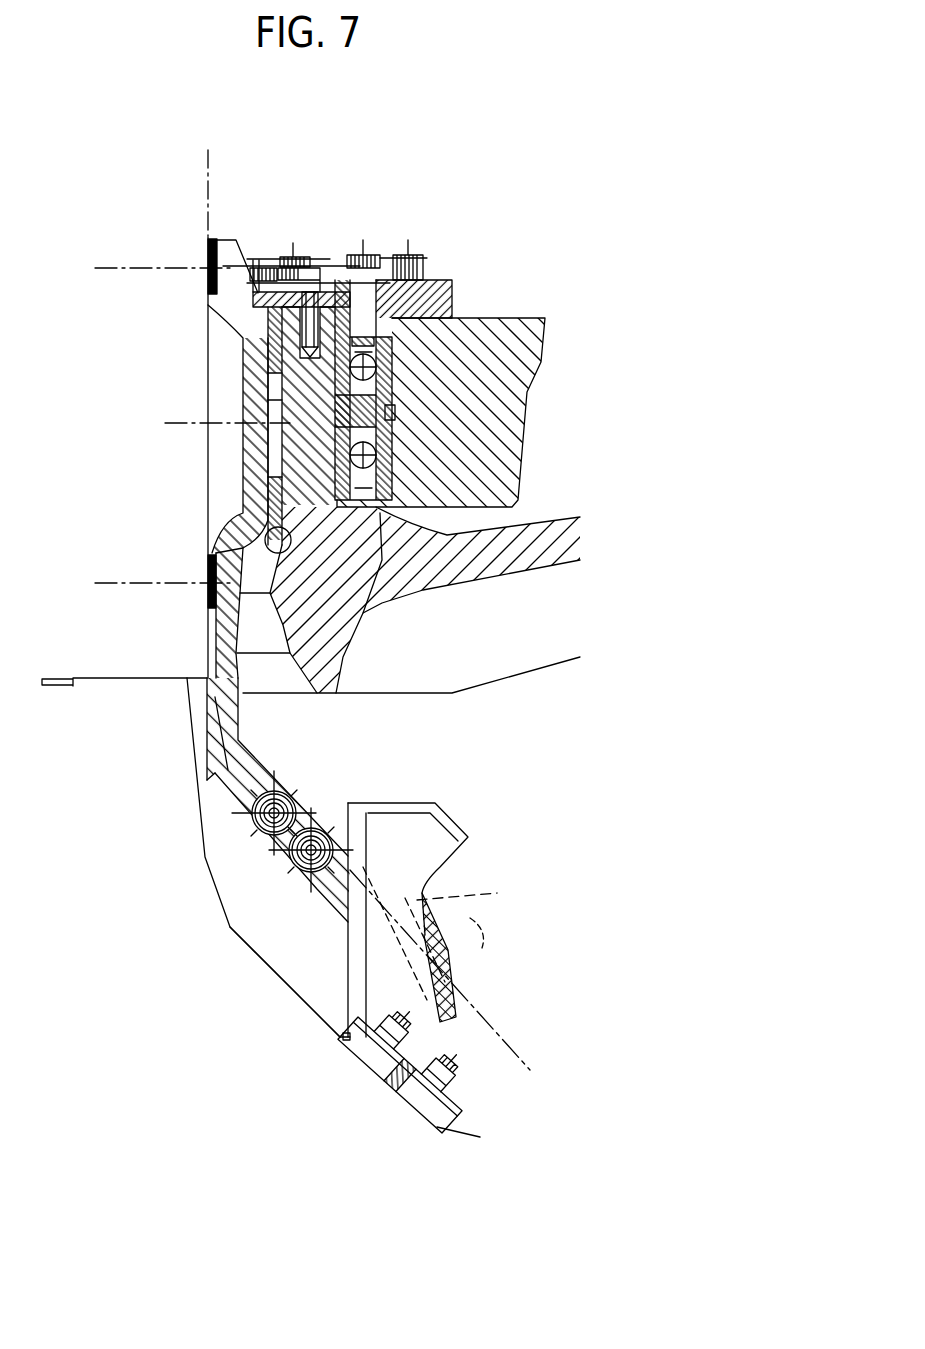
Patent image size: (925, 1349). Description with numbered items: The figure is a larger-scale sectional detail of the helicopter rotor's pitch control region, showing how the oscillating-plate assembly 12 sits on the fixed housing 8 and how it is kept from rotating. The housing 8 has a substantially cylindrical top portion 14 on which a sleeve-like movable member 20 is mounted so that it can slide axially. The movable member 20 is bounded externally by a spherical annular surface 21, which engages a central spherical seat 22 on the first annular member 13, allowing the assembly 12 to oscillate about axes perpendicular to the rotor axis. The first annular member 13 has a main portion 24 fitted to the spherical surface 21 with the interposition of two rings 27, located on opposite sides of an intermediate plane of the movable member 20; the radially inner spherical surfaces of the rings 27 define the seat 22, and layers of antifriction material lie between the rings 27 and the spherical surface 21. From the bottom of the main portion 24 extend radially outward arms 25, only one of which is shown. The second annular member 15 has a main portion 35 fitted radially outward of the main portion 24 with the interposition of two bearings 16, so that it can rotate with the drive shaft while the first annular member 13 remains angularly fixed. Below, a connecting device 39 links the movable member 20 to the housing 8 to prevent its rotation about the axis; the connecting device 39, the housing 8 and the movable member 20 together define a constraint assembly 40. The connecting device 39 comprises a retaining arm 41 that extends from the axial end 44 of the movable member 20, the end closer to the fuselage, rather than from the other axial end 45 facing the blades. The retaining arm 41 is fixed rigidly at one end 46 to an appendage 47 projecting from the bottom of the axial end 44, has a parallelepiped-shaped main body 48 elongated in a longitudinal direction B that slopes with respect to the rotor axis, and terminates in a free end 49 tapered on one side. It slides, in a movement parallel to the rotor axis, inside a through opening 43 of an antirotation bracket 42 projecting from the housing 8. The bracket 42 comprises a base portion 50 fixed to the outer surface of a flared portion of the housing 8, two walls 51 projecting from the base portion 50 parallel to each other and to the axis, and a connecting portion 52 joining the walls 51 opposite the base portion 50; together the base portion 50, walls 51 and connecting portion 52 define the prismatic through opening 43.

The housing 8 is at (196, 971).
The oscillating-plate assembly 12 is at (564, 304).
The first annular member 13 is at (328, 343).
The top portion 14 is at (140, 266).
The second annular member 15 is at (482, 320).
The bearings 16 is at (432, 300).
The movable member 20 is at (241, 461).
The spherical annular surface 21 is at (282, 417).
The spherical seat 22 is at (270, 522).
The main portion 24 is at (305, 503).
The arms 25 is at (540, 558).
The rings 27 is at (268, 318).
The main portion 35 is at (512, 408).
The connecting device 39 is at (281, 969).
The constraint assembly 40 is at (397, 1102).
The retaining arm 41 is at (341, 841).
The antirotation bracket 42 is at (405, 1097).
The through opening 43 is at (412, 854).
The axial end 44 is at (222, 626).
The axial end 45 is at (218, 240).
The end 46 is at (273, 848).
The appendage 47 is at (230, 712).
The main body 48 is at (506, 889).
The free end 49 is at (450, 973).
The base portion 50 is at (384, 1068).
The walls 51 is at (427, 1043).
The connecting portion 52 is at (458, 818).
The longitudinal direction B is at (488, 1023).